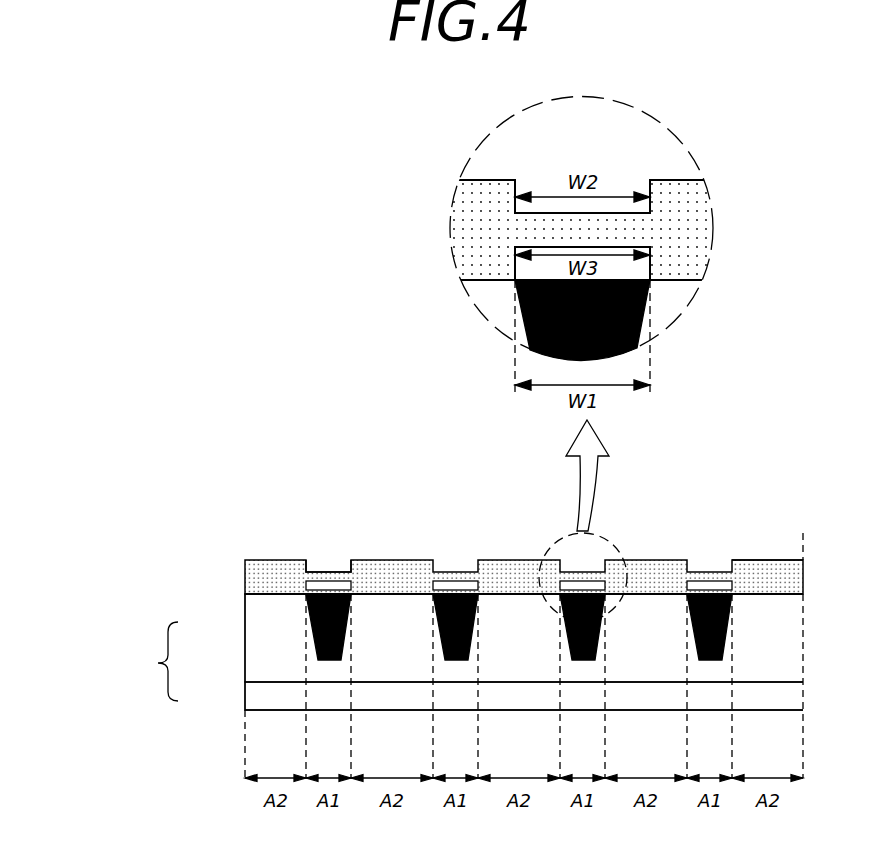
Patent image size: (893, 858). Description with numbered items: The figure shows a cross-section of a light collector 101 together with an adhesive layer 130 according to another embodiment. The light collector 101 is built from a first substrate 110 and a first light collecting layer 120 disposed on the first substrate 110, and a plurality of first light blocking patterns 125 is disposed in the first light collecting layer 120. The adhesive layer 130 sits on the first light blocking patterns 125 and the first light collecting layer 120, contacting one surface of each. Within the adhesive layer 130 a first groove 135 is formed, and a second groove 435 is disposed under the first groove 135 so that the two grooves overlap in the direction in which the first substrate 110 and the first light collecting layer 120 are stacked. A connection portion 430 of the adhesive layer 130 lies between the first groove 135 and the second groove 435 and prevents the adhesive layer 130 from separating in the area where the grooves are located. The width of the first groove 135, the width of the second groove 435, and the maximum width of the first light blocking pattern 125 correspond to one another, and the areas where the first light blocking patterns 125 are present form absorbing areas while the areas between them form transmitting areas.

The light collector 101 is at (459, 652).
The first substrate 110 is at (260, 698).
The first light collecting layer 120 is at (260, 658).
The first light blocking pattern 125 is at (312, 628).
The adhesive layer 130 is at (236, 576).
The first groove 135 is at (329, 562).
The connection portion 430 is at (709, 575).
The second groove 435 is at (306, 585).